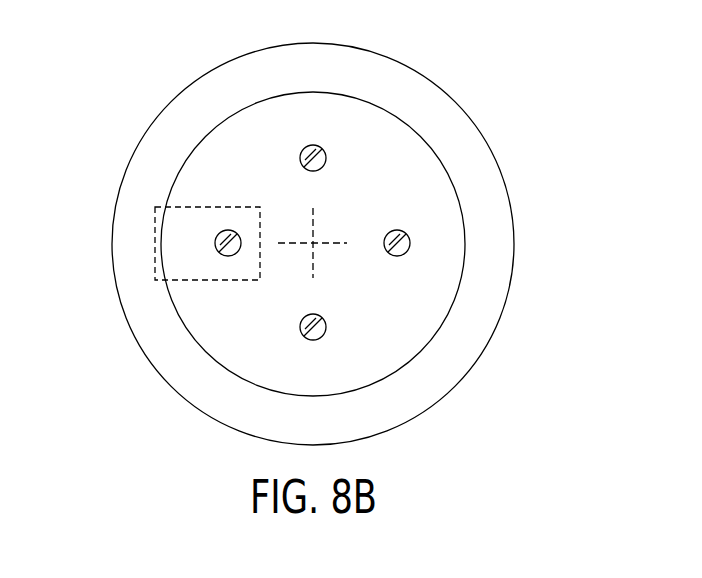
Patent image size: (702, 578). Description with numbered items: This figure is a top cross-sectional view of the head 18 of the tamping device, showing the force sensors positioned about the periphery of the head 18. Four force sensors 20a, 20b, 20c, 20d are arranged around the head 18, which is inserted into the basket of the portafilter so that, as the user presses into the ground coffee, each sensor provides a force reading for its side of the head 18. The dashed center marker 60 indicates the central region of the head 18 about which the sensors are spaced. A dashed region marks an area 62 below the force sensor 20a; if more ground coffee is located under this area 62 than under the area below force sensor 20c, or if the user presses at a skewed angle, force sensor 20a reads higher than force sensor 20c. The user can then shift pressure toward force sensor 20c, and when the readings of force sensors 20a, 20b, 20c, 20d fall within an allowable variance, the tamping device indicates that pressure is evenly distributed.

The head 18 is at (388, 68).
The center axis marker 60 is at (312, 240).
The area 62 is at (207, 207).
The force sensor 20a is at (216, 243).
The force sensor 20b is at (324, 152).
The force sensor 20c is at (409, 237).
The force sensor 20d is at (323, 336).